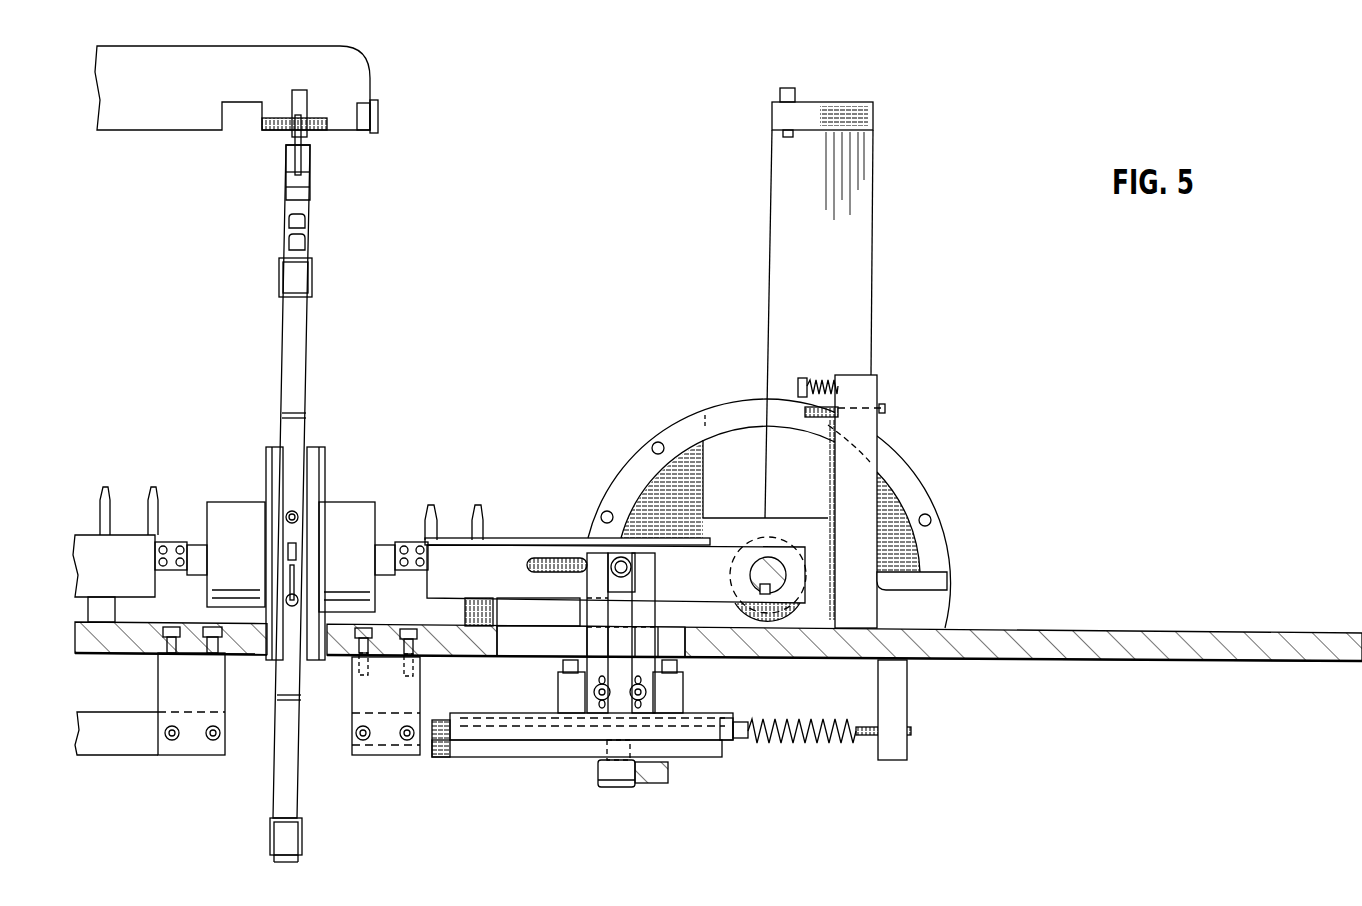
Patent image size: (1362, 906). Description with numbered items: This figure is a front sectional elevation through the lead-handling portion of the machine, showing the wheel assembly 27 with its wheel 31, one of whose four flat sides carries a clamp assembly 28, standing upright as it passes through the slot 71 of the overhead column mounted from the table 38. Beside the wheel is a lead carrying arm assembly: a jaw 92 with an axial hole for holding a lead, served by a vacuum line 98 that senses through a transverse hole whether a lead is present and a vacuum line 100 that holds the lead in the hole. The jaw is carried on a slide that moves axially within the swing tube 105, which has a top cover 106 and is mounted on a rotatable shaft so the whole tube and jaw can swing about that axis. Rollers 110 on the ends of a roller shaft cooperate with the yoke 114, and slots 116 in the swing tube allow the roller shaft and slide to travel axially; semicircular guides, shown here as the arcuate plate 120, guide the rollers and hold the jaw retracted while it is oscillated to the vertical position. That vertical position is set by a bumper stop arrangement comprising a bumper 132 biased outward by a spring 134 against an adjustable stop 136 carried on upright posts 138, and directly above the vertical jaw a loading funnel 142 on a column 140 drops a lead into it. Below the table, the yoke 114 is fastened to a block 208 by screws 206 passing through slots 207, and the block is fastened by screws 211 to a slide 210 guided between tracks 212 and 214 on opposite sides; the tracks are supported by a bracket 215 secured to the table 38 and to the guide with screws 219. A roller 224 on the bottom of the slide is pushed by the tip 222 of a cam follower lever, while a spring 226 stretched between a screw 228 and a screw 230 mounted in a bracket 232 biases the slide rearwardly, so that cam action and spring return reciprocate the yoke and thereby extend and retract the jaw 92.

The wheel assembly 27 is at (352, 324).
The clamp assembly 28 is at (278, 145).
The wheel 31 is at (307, 405).
The table 38 is at (1046, 636).
The slot 71 is at (307, 107).
The jaw 92 is at (178, 540).
The vacuum line 98 is at (433, 512).
The vacuum line 100 is at (480, 512).
The swing tube 105 is at (510, 600).
The top cover 106 is at (538, 540).
The rollers 110 is at (630, 575).
The yoke 114 is at (630, 622).
The slots 116 is at (565, 558).
The arcuate plate 120 is at (724, 428).
The bumper 132 is at (800, 378).
The spring 134 is at (826, 378).
The adjustable stop 136 is at (805, 412).
The upright posts 138 is at (880, 440).
The column 140 is at (873, 252).
The loading funnel 142 is at (780, 94).
The screws 206 is at (594, 692).
The slots 207 is at (683, 705).
The block 208 is at (558, 682).
The slide 210 is at (728, 742).
The screws 211 is at (678, 668).
The track 212 is at (460, 745).
The track 214 is at (432, 752).
The bracket 215 is at (352, 710).
The screws 219 is at (412, 632).
The tip 222 is at (668, 782).
The roller 224 is at (598, 787).
The spring 226 is at (818, 722).
The screw 228 is at (741, 722).
The screw 230 is at (912, 733).
The bracket 232 is at (907, 712).